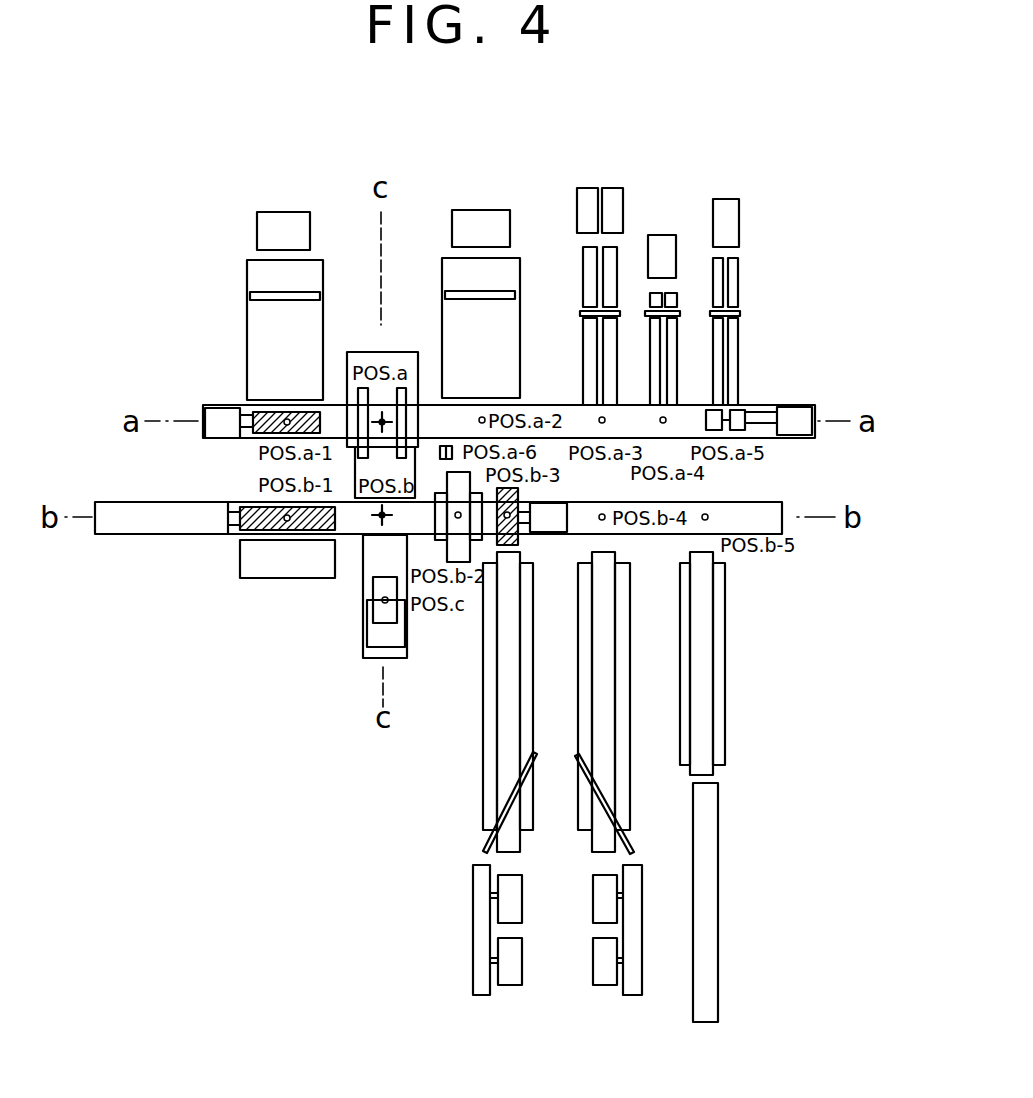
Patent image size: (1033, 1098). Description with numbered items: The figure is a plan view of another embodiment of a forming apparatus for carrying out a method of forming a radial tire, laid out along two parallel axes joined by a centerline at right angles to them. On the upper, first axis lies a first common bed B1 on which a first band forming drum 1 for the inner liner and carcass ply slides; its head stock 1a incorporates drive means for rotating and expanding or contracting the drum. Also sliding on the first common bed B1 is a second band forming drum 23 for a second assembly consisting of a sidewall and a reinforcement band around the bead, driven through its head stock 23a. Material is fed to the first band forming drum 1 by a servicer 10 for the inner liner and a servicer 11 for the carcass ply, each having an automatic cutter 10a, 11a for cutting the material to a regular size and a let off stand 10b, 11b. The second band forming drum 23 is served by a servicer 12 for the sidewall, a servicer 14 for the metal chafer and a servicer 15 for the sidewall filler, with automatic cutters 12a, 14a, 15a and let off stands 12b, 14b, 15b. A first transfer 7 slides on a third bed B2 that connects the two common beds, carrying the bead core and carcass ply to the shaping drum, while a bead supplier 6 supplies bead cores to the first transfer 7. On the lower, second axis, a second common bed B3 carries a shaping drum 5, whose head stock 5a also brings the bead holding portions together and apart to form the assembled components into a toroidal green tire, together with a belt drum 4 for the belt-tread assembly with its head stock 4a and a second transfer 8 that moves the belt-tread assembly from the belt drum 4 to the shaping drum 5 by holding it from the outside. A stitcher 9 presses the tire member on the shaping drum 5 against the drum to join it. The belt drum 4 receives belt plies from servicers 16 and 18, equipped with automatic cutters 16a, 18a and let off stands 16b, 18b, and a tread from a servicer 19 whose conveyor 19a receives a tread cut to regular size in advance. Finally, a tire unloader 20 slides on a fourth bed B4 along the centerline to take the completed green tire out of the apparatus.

The first band forming drum 1 is at (268, 410).
The head stock 1a is at (223, 407).
The belt drum 4 is at (520, 540).
The head stock 4a is at (557, 505).
The shaping drum 5 is at (228, 512).
The head stock 5a is at (168, 503).
The bead supplier 6 is at (440, 450).
The first transfer 7 is at (363, 352).
The second transfer 8 is at (482, 540).
The stitcher 9 is at (240, 562).
The servicer 10 is at (247, 278).
The automatic cutter 10a is at (255, 297).
The let off stand 10b is at (257, 228).
The servicer 11 is at (442, 272).
The automatic cutter 11a is at (448, 297).
The let off stand 11b is at (475, 210).
The servicer 12 is at (582, 367).
The automatic cutter 12a is at (582, 312).
The let off stand 12b is at (607, 188).
The servicer 14 is at (692, 358).
The automatic cutter 14a is at (683, 310).
The let off stand 14b is at (657, 235).
The servicer 15 is at (740, 357).
The automatic cutter 15a is at (742, 312).
The let off stand 15b is at (740, 220).
The servicer 16 is at (533, 710).
The automatic cutter 16a is at (505, 825).
The let off stand 16b is at (522, 892).
The servicer 18 is at (632, 710).
The automatic cutter 18a is at (630, 852).
The let off stand 18b is at (643, 968).
The servicer 19 is at (727, 710).
The conveyor 19a is at (720, 883).
The tire unloader 20 is at (407, 630).
The second band forming drum 23 is at (748, 410).
The head stock 23a is at (797, 430).
The first common bed B1 is at (210, 442).
The third bed B2 is at (353, 462).
The second common bed B3 is at (350, 537).
The fourth bed B4 is at (365, 637).